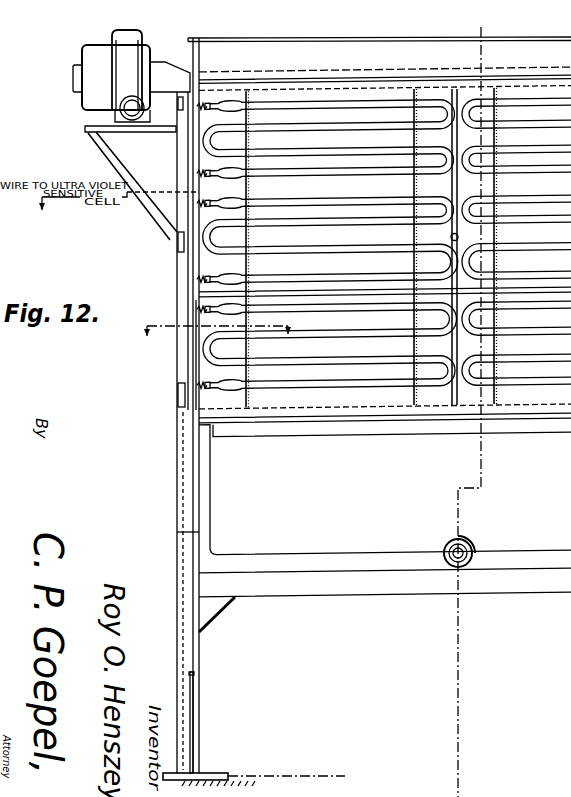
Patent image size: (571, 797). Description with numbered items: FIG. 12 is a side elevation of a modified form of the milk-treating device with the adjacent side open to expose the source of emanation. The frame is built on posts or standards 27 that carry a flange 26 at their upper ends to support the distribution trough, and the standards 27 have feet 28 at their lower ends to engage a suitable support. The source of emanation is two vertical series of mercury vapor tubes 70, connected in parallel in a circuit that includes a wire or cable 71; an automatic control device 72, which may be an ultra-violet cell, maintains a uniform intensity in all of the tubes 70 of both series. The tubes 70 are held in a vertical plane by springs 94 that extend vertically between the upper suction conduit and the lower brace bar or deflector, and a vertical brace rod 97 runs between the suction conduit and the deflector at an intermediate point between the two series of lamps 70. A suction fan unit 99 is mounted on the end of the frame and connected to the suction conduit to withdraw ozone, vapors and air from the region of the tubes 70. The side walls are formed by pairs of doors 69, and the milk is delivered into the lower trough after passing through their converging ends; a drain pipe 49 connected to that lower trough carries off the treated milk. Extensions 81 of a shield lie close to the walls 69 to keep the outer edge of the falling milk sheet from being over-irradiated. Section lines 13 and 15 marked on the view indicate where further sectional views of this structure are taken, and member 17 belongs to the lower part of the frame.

The flange 26 is at (188, 36).
The section line 13- 13 is at (478, 26).
The suction fan unit 99 is at (125, 77).
The wire or cable 71 is at (205, 194).
The doors 69 is at (178, 273).
The posts or standards 27 is at (185, 458).
The extensions 81 is at (193, 348).
The section line 15- 15 is at (221, 334).
The mercury vapor tubes 70 is at (370, 130).
The springs 94 is at (248, 241).
The vertical brace rod 97 is at (455, 399).
The automatic control device 72 is at (458, 239).
The lower frame member 17 is at (329, 450).
The drain pipe 49 is at (463, 566).
The feet 28 is at (201, 727).